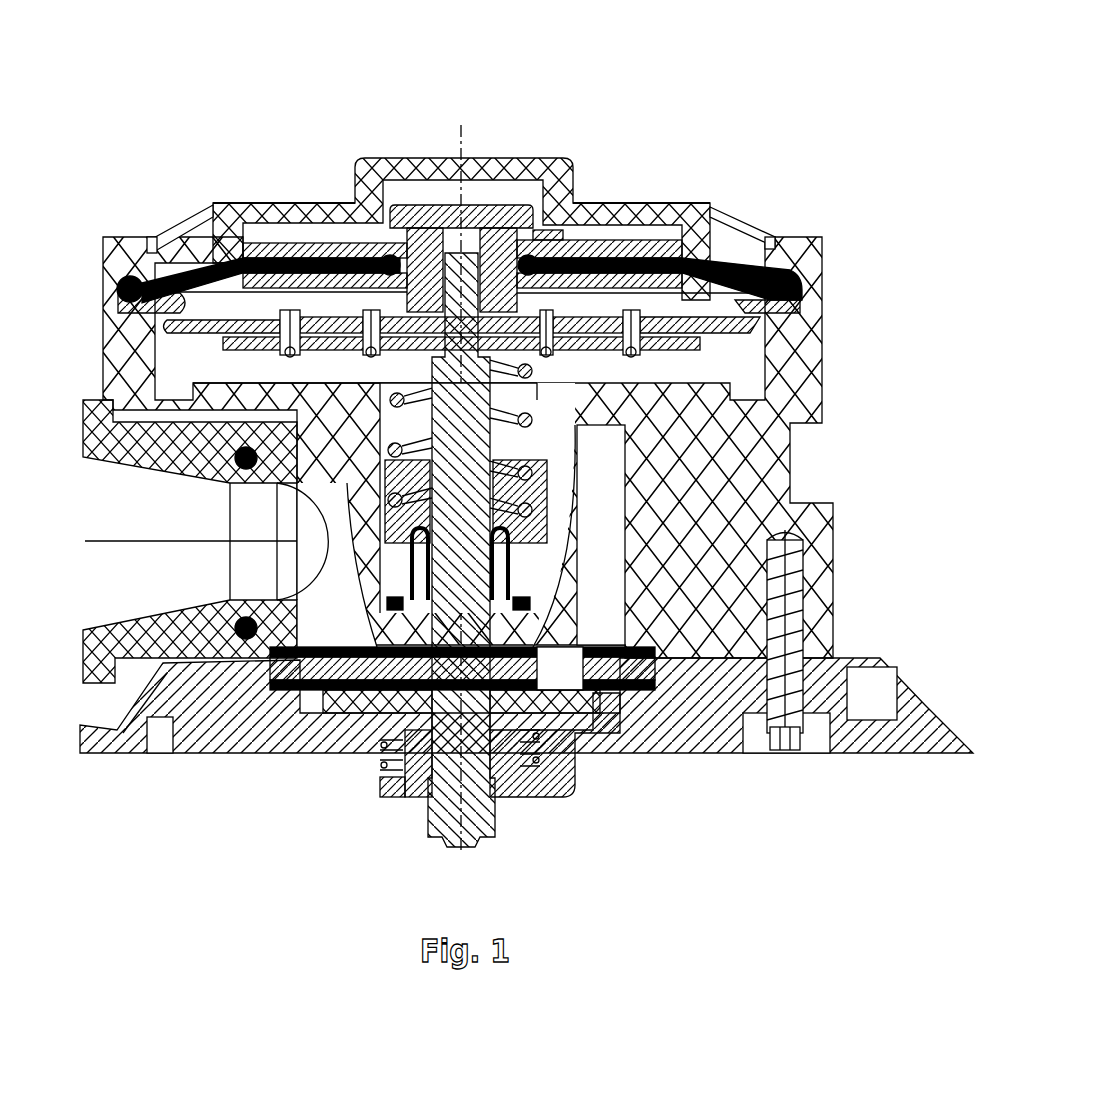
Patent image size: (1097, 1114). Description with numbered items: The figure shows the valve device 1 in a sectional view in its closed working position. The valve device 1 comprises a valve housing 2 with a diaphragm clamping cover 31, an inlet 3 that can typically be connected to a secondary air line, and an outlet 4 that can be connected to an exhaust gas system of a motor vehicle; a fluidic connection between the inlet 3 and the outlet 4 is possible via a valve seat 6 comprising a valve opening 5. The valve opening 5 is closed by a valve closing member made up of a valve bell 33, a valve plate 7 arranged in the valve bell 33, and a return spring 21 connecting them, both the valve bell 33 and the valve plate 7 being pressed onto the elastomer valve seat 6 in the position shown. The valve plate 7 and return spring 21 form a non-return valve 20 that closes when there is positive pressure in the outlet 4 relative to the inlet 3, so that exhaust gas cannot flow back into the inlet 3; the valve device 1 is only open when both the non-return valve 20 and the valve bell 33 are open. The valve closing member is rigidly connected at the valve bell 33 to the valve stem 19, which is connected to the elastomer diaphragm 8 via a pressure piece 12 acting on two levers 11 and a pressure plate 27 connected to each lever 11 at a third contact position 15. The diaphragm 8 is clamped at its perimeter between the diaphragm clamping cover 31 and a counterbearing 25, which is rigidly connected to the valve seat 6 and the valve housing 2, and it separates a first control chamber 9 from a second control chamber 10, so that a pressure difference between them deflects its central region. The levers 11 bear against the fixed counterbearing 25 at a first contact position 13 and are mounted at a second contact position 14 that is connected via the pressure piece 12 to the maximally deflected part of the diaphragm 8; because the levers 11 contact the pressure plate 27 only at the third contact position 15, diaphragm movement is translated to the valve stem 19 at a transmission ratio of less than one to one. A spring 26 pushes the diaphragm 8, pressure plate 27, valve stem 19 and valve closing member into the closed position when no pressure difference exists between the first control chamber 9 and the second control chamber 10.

The valve device 1 is at (257, 88).
The valve housing 2 is at (773, 442).
The inlet 3 is at (138, 516).
The outlet 4 is at (627, 733).
The valve opening 5 is at (567, 681).
The valve seat 6 is at (307, 697).
The valve plate 7 is at (340, 713).
The diaphragm 8 is at (237, 323).
The first control chamber 9 is at (397, 193).
The second control chamber 10 is at (206, 382).
The lever 11 is at (337, 323).
The pressure piece 12 is at (463, 227).
The first contact position 13 is at (163, 323).
The second contact position 14 is at (353, 195).
The third contact position 15 is at (193, 240).
The valve stem 19 is at (477, 443).
The non-return valve 20 is at (521, 810).
The return spring 21 is at (567, 772).
The counterbearing 25 is at (120, 293).
The spring 26 is at (530, 377).
The pressure plate 27 is at (355, 340).
The diaphragm clamping cover 31 is at (643, 203).
The valve bell 33 is at (363, 780).